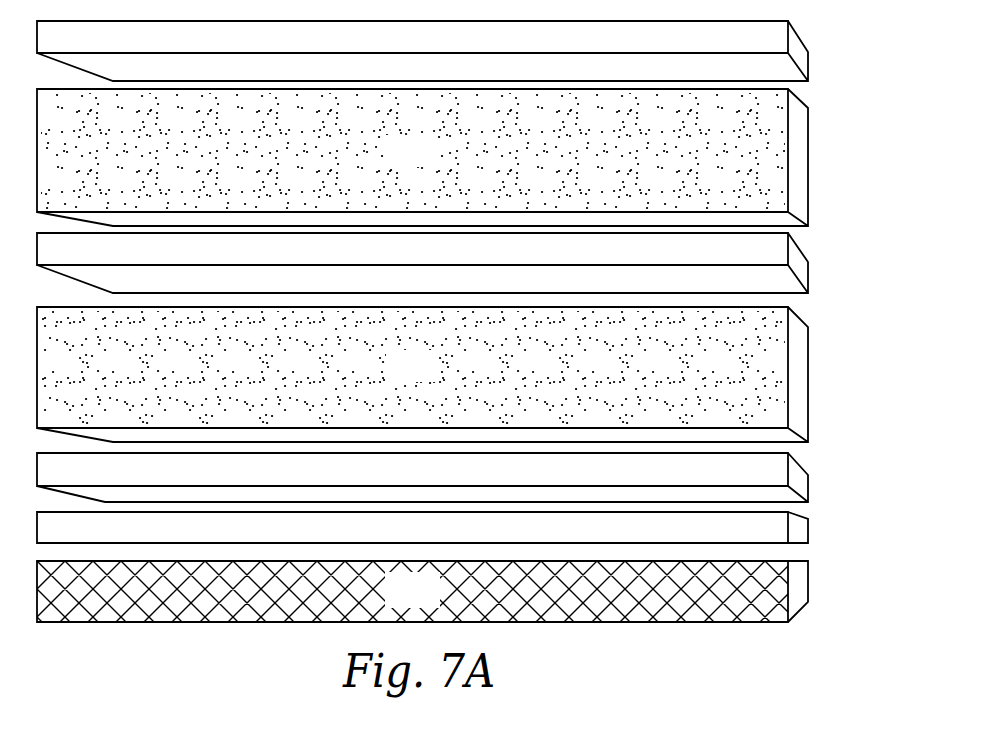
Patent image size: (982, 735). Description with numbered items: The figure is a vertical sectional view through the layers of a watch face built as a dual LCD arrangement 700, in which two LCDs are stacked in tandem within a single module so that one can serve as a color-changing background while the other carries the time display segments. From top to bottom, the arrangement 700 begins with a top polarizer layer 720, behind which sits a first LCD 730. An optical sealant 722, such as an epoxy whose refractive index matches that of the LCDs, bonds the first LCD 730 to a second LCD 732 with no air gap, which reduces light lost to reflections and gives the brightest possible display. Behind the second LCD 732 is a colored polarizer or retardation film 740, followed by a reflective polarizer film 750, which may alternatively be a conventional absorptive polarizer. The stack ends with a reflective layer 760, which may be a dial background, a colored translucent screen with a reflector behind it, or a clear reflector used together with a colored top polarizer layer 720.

The dual LCD arrangement 700 is at (454, 321).
The top polarizer layer 720 is at (433, 50).
The first LCD 730 is at (433, 163).
The optical sealant 722 is at (433, 262).
The second LCD 732 is at (433, 378).
The colored polarizer or retardation film 740 is at (433, 482).
The reflective polarizer film 750 is at (433, 538).
The reflective layer 760 is at (433, 603).